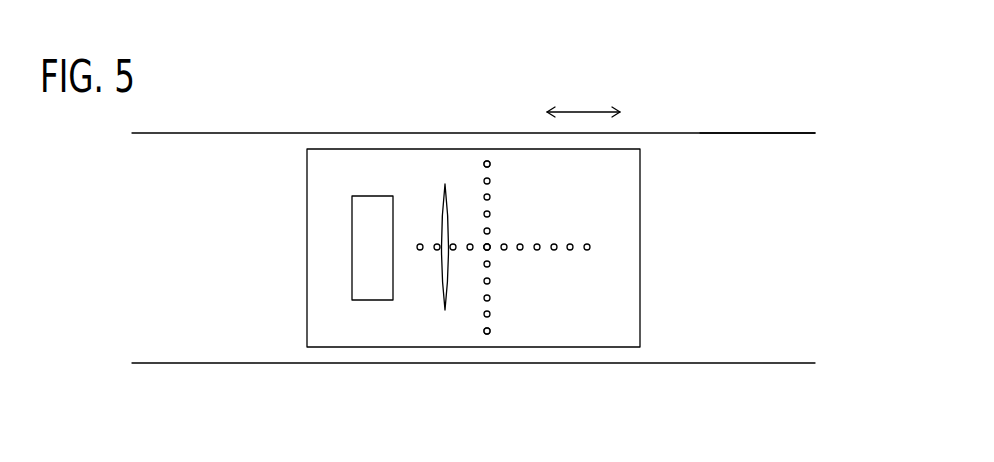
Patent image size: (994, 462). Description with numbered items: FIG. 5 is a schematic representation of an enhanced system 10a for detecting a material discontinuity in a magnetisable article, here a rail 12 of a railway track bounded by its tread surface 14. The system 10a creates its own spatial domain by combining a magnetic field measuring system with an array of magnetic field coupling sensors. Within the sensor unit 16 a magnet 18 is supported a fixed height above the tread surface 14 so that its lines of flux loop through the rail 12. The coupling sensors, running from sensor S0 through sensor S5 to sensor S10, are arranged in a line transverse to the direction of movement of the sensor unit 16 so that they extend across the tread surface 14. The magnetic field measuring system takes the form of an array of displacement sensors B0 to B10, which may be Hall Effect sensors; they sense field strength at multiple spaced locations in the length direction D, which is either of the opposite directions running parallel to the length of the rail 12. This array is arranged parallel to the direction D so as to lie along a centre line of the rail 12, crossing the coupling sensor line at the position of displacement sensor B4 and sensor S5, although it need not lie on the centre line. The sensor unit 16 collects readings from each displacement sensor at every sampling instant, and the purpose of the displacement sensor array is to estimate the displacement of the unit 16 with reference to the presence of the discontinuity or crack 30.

The enhanced system 10a is at (653, 218).
The rail 12 is at (187, 259).
The tread surface 14 is at (770, 132).
The sensor unit 16 is at (487, 162).
The magnet 18 is at (348, 212).
The discontinuity/crack 30 is at (440, 198).
The length direction D is at (583, 97).
The coupling sensor S0 is at (490, 165).
The coupling sensor S5 is at (535, 225).
The coupling sensor S10 is at (490, 330).
The displacement sensor B0 is at (421, 250).
The displacement sensor B4 is at (489, 245).
The displacement sensor B10 is at (587, 250).